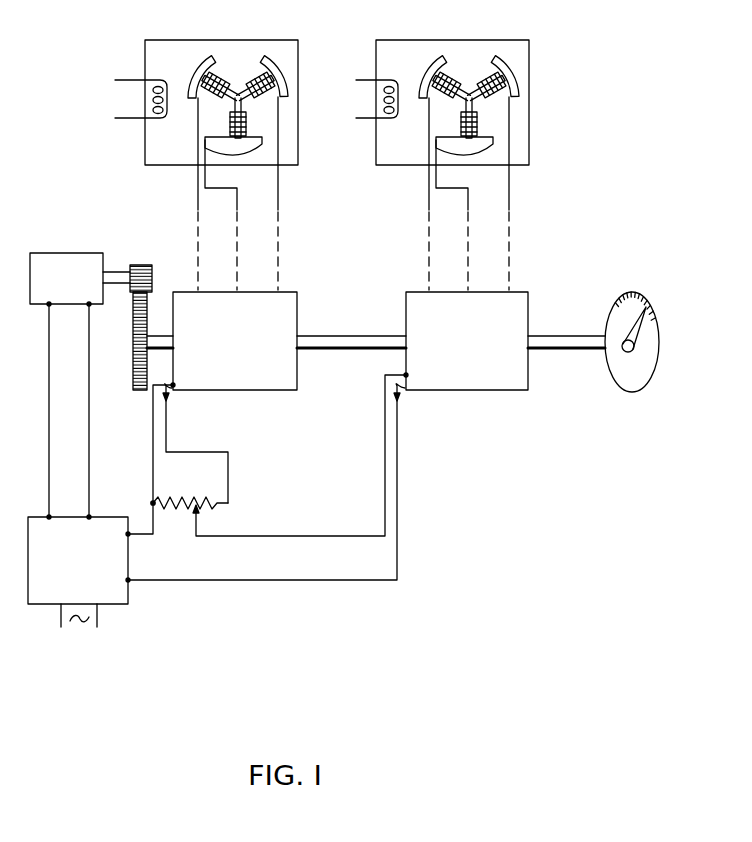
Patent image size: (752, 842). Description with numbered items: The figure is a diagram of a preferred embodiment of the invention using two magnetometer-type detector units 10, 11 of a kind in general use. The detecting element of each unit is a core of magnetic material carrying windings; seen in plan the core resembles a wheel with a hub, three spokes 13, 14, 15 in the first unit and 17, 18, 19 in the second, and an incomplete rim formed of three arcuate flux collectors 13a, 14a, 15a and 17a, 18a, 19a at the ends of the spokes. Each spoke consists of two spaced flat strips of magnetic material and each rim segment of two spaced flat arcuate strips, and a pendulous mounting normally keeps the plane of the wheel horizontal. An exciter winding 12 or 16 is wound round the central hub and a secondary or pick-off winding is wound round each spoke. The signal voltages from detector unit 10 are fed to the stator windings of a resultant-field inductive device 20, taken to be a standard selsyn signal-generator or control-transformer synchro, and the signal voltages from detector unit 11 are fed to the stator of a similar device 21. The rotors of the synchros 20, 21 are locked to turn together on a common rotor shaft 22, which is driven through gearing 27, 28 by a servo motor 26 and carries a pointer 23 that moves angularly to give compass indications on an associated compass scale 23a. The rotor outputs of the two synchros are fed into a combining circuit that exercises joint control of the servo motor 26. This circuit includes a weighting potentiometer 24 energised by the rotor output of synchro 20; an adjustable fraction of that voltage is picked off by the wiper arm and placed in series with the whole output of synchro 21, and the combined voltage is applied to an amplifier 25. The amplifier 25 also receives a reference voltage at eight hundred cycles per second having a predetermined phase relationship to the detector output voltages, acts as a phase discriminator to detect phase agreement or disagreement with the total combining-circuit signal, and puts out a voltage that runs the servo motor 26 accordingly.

The detector unit 10 is at (170, 166).
The detector unit 11 is at (394, 166).
The exciter winding 12 is at (119, 100).
The spoke 13 is at (225, 84).
The flux collector 13a is at (202, 60).
The spoke 14 is at (252, 84).
The flux collector 14a is at (266, 60).
The spoke 15 is at (248, 120).
The flux collector 15a is at (261, 152).
The exciter winding 16 is at (359, 102).
The spoke 17 is at (450, 57).
The flux collector 17a is at (412, 54).
The spoke 18 is at (486, 57).
The flux collector 18a is at (519, 53).
The spoke 19 is at (510, 119).
The flux collector 19a is at (497, 169).
The resultant-field inductive device 20 is at (252, 361).
The resultant-field inductive device 21 is at (474, 363).
The common rotor shaft 22 is at (162, 332).
The pointer 23 is at (629, 300).
The compass scale 23a is at (618, 379).
The weighting potentiometer 24 is at (190, 490).
The amplifier 25 is at (90, 577).
The servo motor 26 is at (82, 294).
The gearing 27 is at (151, 270).
The gearing 28 is at (137, 391).